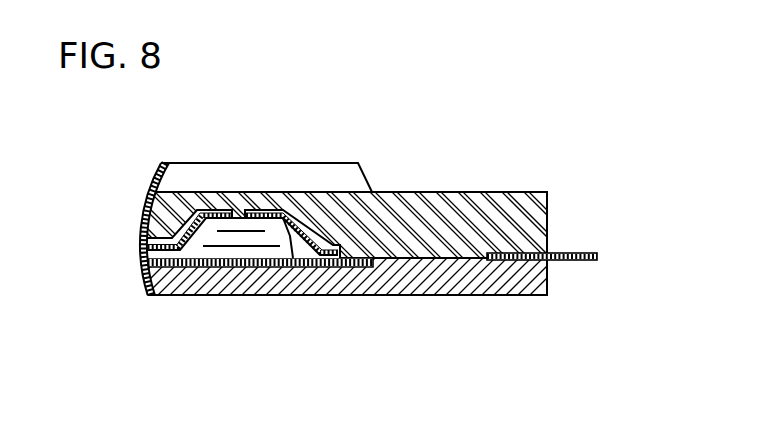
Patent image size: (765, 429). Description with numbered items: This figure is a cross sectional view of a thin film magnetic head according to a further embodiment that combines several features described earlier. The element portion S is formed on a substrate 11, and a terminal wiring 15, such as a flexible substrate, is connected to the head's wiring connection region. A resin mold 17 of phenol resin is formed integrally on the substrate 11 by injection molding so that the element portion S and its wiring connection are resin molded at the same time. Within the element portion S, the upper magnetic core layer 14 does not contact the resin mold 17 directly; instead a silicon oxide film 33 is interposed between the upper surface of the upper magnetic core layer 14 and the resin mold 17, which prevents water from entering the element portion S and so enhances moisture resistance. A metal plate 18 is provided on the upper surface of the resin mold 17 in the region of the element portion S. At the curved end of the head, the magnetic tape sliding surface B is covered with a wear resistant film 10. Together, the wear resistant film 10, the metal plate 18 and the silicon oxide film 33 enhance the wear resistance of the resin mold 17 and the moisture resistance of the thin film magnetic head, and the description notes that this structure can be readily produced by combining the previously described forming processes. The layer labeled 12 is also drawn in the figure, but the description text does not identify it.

The wear resistant film 10 is at (150, 191).
The element portion S is at (208, 207).
The metal plate 18 is at (249, 177).
The silicon oxide film 33 is at (269, 208).
The gate insulating film 12 is at (364, 258).
The resin mold 17 is at (463, 210).
The terminal wiring 15 is at (570, 253).
The substrate 11 is at (550, 278).
The upper magnetic core layer 14 is at (292, 237).
The magnetic tape sliding surface B is at (134, 214).